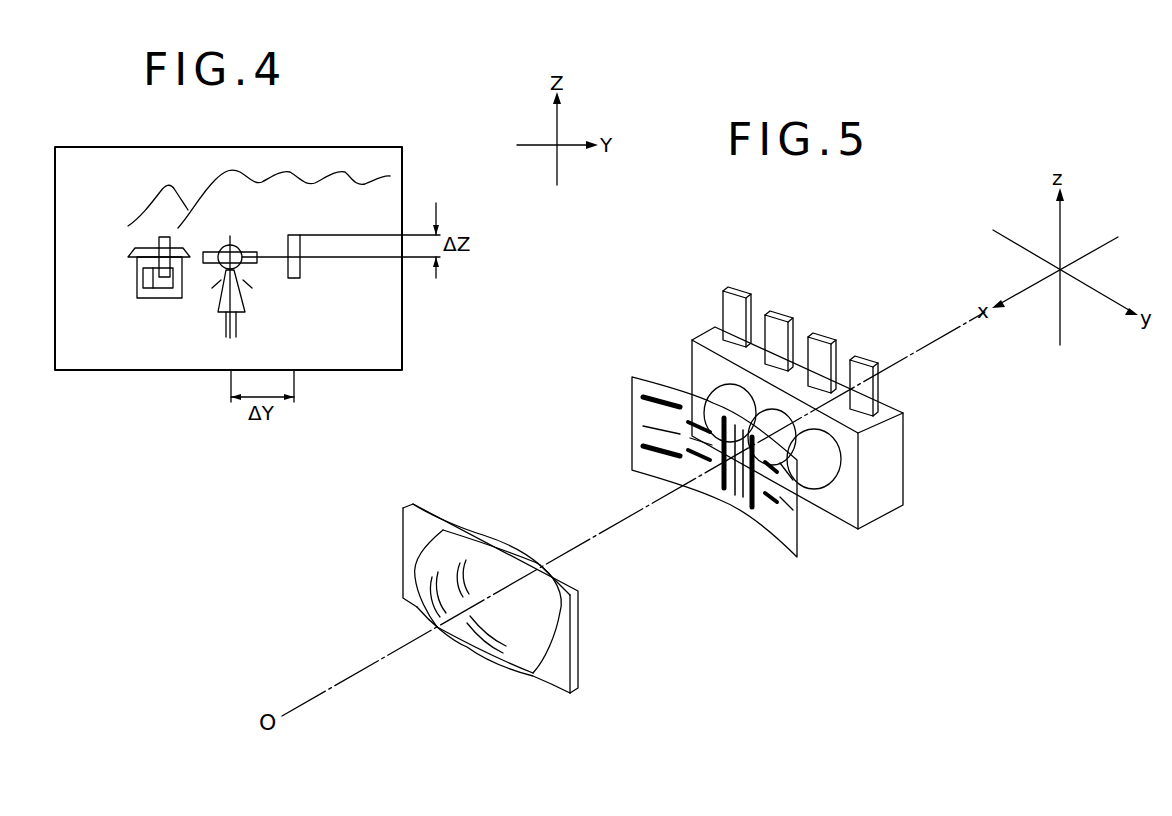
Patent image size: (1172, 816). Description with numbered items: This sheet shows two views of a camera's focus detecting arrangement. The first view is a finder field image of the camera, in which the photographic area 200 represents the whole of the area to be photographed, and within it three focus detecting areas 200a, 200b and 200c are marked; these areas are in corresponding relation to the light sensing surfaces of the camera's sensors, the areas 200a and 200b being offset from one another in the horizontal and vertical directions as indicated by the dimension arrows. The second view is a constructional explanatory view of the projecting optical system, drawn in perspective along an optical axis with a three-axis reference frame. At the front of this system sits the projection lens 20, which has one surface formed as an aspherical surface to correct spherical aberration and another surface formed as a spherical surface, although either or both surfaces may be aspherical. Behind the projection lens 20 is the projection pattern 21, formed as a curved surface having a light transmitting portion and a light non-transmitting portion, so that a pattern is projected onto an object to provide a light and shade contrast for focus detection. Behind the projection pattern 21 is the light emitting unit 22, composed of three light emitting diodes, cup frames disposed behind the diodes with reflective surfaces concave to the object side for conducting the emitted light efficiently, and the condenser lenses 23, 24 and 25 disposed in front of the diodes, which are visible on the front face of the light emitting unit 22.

In FIG. 4, the photographic area 200 is at (382, 371).
In FIG. 4, the focus detecting area 200a is at (226, 247).
In FIG. 4, the focus detecting area 200b is at (300, 265).
In FIG. 4, the focus detecting area 200c is at (159, 239).
In FIG. 5, the projection lens 20 is at (518, 657).
In FIG. 5, the projection pattern 21 is at (785, 535).
In FIG. 5, the light emitting unit 22 is at (798, 419).
In FIG. 5, the condenser lens 23 is at (827, 461).
In FIG. 5, the condenser lens 24 is at (773, 423).
In FIG. 5, the condenser lens 25 is at (725, 386).